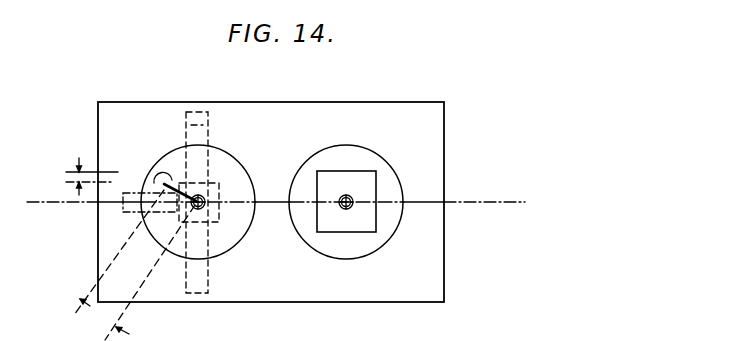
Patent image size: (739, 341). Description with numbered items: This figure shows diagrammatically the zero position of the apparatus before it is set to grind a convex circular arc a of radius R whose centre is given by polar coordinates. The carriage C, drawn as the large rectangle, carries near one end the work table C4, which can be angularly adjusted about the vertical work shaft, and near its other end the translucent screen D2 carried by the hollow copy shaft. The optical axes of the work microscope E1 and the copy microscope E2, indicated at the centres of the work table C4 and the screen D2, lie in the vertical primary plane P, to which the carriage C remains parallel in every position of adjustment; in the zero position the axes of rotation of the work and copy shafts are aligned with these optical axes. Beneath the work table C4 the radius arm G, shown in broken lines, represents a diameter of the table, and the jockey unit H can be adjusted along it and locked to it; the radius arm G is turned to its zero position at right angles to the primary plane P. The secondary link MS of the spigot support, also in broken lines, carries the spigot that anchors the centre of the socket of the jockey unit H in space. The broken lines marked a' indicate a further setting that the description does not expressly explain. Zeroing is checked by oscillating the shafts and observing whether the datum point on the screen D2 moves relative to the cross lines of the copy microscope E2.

The carriage C is at (407, 113).
The primary plane P is at (274, 203).
The work table C4 is at (217, 150).
The radius arm G is at (197, 125).
The jockey unit H is at (218, 186).
The work microscope E1 is at (195, 208).
The arc to be ground a is at (172, 134).
The secondary link MS is at (124, 210).
The radius of the arc R is at (82, 176).
The arm displacement a' is at (134, 265).
The translucent screen D2 is at (327, 177).
The copy microscope E2 is at (352, 194).